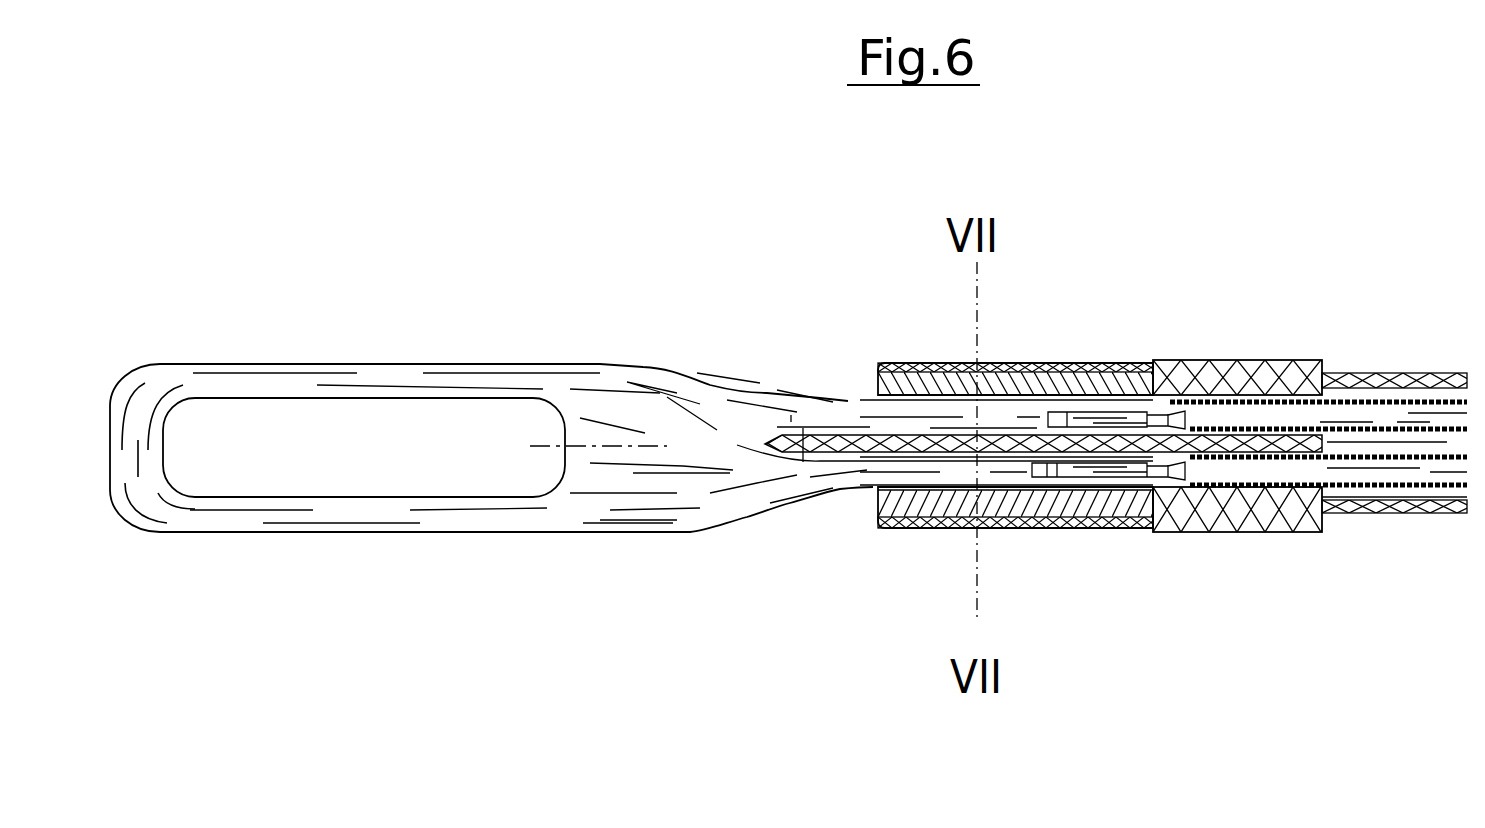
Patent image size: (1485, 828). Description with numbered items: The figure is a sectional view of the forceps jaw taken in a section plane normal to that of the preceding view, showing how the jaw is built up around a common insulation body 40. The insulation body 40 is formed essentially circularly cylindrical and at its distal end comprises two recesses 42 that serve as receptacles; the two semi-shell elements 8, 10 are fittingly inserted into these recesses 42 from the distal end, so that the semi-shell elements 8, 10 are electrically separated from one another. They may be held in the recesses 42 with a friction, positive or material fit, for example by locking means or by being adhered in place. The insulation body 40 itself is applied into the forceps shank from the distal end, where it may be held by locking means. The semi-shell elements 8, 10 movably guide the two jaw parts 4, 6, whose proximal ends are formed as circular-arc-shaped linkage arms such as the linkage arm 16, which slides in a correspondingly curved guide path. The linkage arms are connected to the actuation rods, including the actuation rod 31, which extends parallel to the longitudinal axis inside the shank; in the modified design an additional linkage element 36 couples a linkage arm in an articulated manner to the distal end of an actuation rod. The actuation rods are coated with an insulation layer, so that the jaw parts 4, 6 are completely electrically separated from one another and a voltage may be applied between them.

The jaw part 4 is at (567, 515).
The jaw part 6 is at (681, 378).
The semi-shell element 8 is at (1117, 530).
The semi-shell element 10 is at (1040, 360).
The linkage arm 16 is at (847, 400).
The actuation rod 31 is at (1422, 470).
The linkage element 36 is at (1390, 417).
The insulation body 40 is at (1258, 530).
The recess 42 is at (1135, 362).